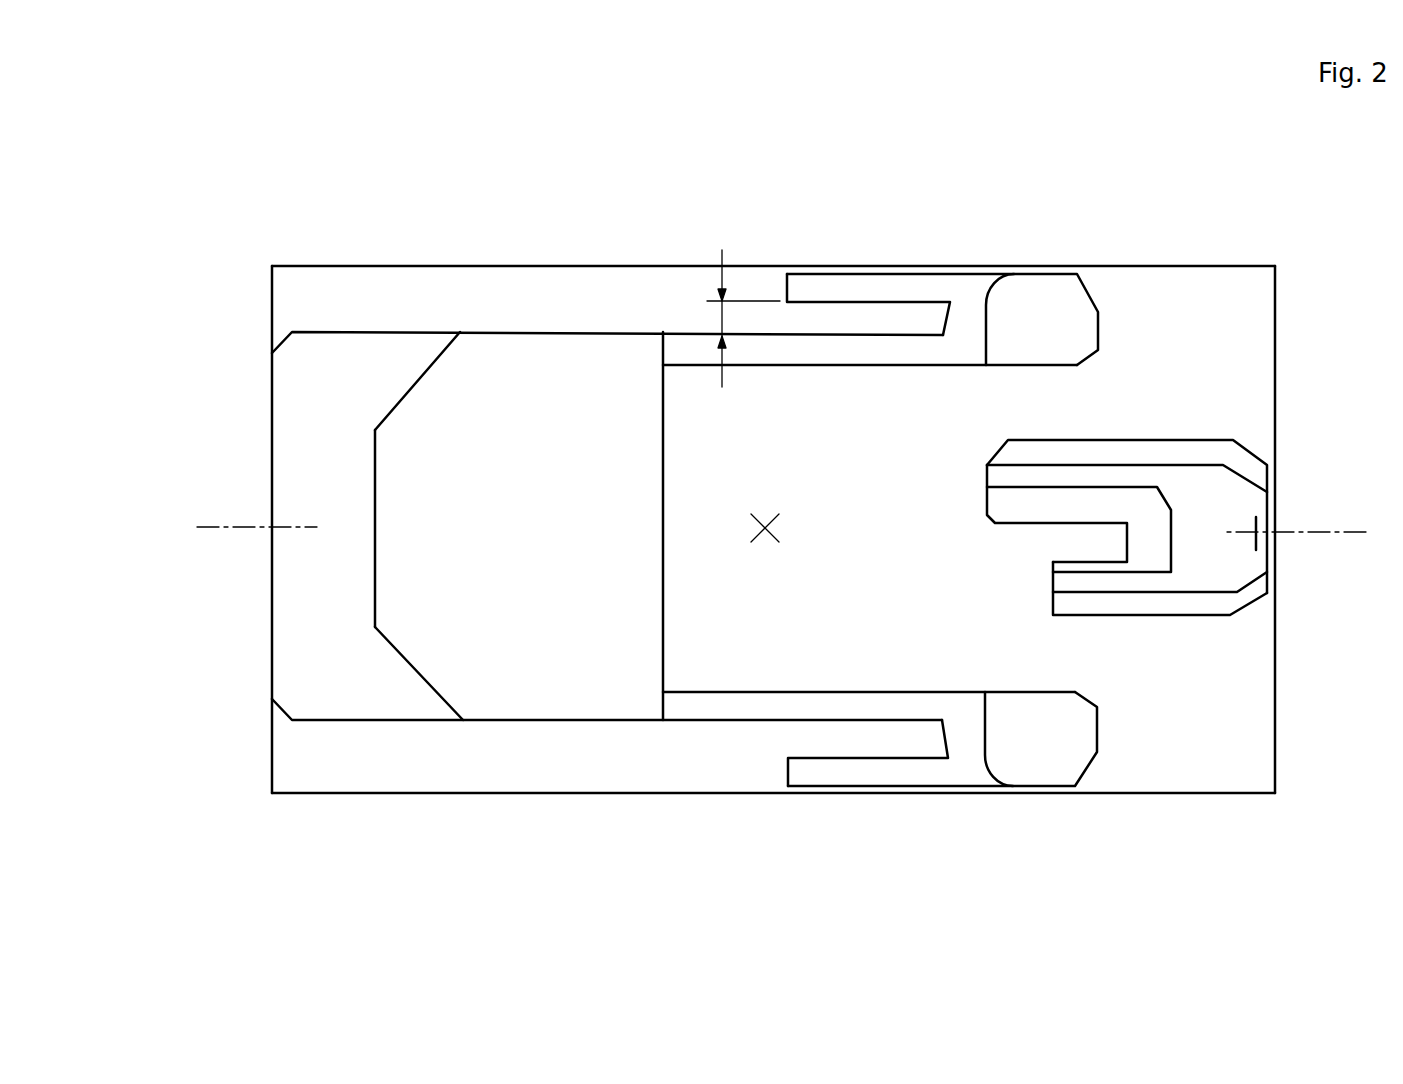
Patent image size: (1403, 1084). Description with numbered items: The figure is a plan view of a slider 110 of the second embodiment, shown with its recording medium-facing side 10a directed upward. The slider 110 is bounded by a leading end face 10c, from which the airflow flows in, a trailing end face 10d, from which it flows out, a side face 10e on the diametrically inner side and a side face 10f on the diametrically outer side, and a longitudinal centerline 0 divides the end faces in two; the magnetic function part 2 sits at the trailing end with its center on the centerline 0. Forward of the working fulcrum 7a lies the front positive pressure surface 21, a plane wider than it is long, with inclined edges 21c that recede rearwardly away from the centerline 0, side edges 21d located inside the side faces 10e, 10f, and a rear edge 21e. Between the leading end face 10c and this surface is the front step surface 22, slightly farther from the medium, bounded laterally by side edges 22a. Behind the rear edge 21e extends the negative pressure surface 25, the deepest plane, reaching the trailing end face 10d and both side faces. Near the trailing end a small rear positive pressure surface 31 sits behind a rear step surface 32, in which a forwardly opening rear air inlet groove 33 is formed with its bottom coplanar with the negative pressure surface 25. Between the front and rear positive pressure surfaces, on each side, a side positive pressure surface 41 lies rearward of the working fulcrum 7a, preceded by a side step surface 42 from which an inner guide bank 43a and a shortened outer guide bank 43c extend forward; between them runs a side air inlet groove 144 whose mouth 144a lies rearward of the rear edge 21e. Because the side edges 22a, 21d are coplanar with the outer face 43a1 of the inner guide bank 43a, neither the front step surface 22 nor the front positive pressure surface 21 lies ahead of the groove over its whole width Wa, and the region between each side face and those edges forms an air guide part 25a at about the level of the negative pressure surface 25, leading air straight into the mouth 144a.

The slider 110 is at (782, 531).
The facing side 10a is at (757, 642).
The leading end face 10c is at (272, 603).
The trailing end face 10d is at (1276, 687).
The side face 10e is at (728, 793).
The side face 10f is at (877, 266).
The front step surface 22 is at (549, 537).
The side edge 22a is at (363, 332).
The negative pressure surface 25 is at (1023, 643).
The air guide part 25a is at (517, 307).
The front positive pressure surface 21 is at (497, 530).
The inclined edge 21c is at (398, 392).
The side edge 21d is at (530, 334).
The rear edge 21e is at (663, 575).
The inner guide bank 43a is at (883, 539).
The outer face 43a1 is at (817, 330).
The outer guide bank 43c is at (913, 290).
The side air inlet groove 144 is at (847, 317).
The mouth 144a is at (780, 317).
The side positive pressure surface 41 is at (1045, 297).
The side step surface 42 is at (972, 310).
The rear positive pressure surface 31 is at (1200, 487).
The rear step surface 32 is at (1142, 525).
The rear air inlet groove 33 is at (1088, 540).
The working fulcrum 7a is at (776, 529).
The centerline 0 is at (780, 531).
The magnetic function part 2 is at (1257, 520).
The width Wa is at (720, 321).